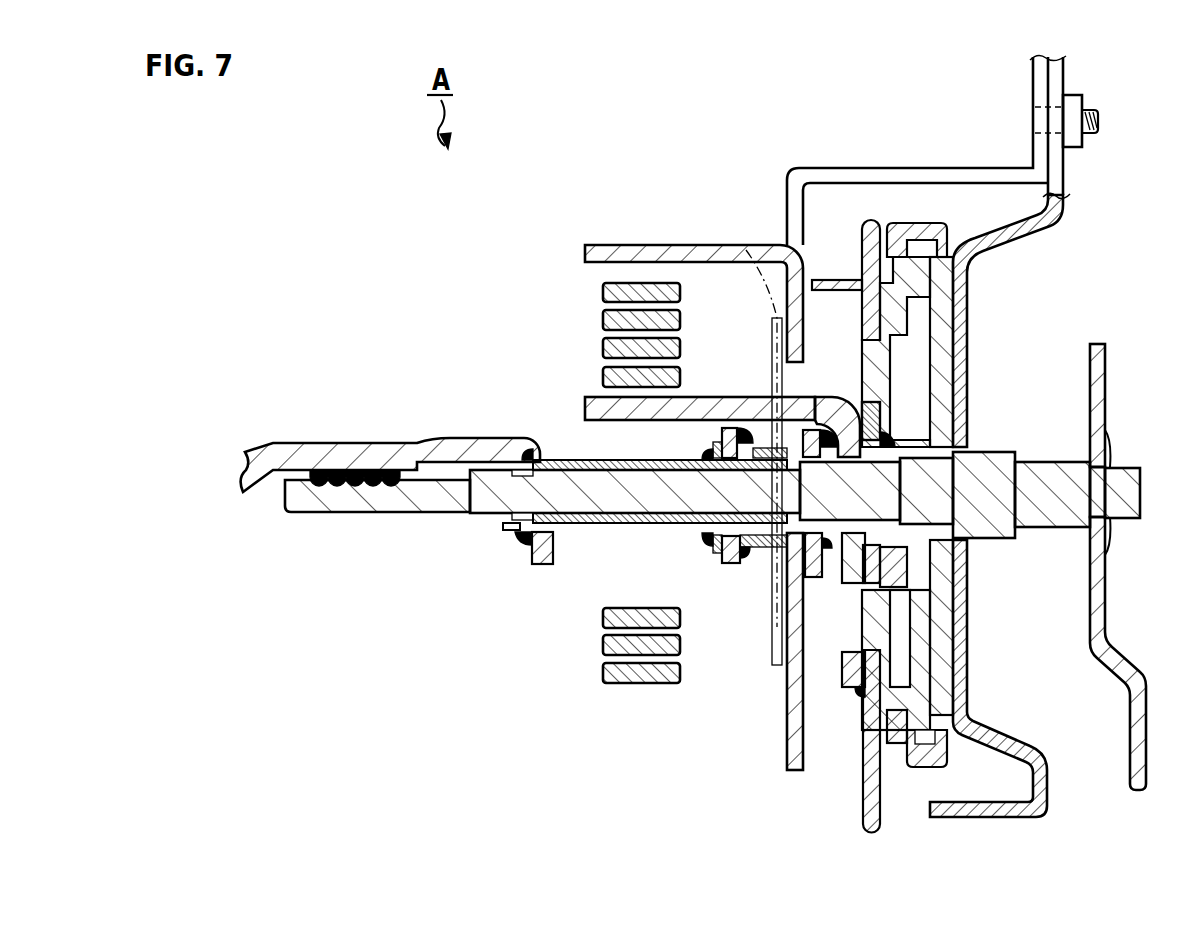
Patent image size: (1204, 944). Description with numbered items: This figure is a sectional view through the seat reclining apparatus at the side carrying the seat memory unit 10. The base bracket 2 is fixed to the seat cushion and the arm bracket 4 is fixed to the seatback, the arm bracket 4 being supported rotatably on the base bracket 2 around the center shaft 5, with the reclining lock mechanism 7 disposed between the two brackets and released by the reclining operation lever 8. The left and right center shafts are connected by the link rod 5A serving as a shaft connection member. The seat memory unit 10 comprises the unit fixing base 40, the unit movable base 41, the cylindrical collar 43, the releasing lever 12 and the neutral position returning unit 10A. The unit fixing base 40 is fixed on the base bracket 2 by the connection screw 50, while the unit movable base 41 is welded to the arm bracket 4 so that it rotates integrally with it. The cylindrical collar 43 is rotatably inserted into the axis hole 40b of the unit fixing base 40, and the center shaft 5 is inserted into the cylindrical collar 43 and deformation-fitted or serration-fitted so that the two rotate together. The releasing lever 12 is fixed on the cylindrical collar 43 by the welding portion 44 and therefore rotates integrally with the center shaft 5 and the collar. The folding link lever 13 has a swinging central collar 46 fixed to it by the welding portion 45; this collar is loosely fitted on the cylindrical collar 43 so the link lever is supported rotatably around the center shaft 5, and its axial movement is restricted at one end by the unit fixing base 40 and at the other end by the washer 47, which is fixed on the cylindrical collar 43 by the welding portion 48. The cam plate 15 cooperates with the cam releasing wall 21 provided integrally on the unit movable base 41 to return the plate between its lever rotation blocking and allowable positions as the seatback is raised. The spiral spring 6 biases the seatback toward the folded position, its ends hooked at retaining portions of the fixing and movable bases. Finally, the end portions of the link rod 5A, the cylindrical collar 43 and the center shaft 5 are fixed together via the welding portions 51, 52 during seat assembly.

The base bracket 2 is at (972, 745).
The arm bracket 4 is at (877, 238).
The center shaft 5 is at (1140, 490).
The link rod 5A is at (285, 440).
The spiral spring 6 is at (646, 686).
The reclining lock mechanism 7 is at (922, 768).
The reclining operation lever 8 is at (1093, 344).
The seat memory unit 10 is at (863, 846).
The neutral position returning unit 10A is at (746, 393).
The releasing lever 12 is at (808, 578).
The folding link lever 13 is at (727, 565).
The cam plate 15 is at (746, 249).
The cam releasing wall 21 is at (828, 278).
The unit fixing base 40 is at (787, 708).
The axis hole 40b is at (814, 440).
The unit movable base 41 is at (866, 670).
The cylindrical collar 43 is at (585, 540).
The welding portion 44 is at (842, 583).
The welding portion 45 is at (746, 568).
The swinging central collar 46 is at (762, 550).
The washer 47 is at (718, 554).
The welding portion 48 is at (708, 540).
The connection screw 50 is at (1088, 110).
The welding portion 51 is at (520, 543).
The welding portion 52 is at (360, 488).